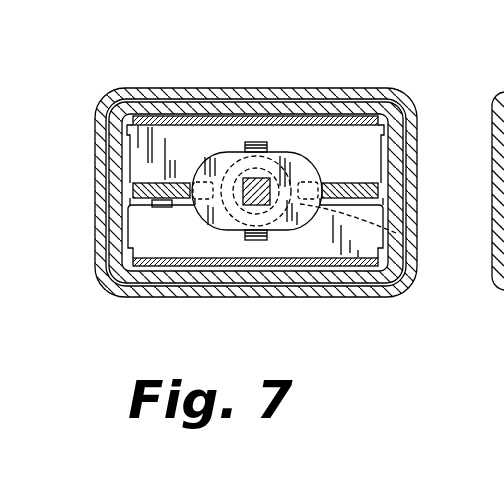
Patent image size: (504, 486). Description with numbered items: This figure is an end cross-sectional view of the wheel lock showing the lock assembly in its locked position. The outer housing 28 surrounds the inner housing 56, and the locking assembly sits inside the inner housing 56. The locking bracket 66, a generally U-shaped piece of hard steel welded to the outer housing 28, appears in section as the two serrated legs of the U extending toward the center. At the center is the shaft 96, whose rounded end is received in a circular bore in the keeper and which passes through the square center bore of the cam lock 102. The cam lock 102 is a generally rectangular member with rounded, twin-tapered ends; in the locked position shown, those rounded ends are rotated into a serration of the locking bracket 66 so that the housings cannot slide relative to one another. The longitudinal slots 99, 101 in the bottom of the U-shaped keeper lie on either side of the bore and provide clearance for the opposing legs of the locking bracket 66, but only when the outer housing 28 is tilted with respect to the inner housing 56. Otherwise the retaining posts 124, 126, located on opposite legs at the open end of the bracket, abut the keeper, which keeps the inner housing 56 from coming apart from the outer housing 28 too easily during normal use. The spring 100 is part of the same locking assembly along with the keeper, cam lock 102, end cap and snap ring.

The outer housing 28 is at (102, 100).
The inner housing 56 is at (125, 271).
The locking bracket 66 is at (376, 189).
The shaft 96 is at (267, 180).
The longitudinal slot 99 is at (263, 233).
The spring 100 is at (245, 168).
The longitudinal slot 101 is at (268, 152).
The cam lock 102 is at (228, 165).
The retaining post 124 is at (396, 233).
The retaining post 126 is at (163, 207).